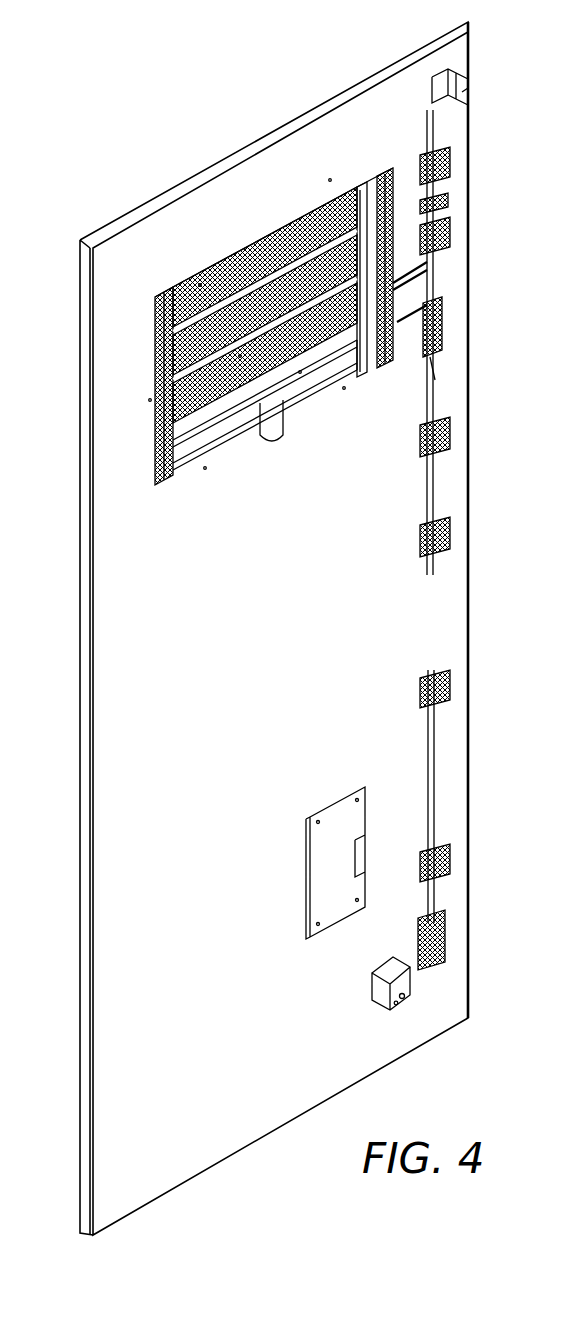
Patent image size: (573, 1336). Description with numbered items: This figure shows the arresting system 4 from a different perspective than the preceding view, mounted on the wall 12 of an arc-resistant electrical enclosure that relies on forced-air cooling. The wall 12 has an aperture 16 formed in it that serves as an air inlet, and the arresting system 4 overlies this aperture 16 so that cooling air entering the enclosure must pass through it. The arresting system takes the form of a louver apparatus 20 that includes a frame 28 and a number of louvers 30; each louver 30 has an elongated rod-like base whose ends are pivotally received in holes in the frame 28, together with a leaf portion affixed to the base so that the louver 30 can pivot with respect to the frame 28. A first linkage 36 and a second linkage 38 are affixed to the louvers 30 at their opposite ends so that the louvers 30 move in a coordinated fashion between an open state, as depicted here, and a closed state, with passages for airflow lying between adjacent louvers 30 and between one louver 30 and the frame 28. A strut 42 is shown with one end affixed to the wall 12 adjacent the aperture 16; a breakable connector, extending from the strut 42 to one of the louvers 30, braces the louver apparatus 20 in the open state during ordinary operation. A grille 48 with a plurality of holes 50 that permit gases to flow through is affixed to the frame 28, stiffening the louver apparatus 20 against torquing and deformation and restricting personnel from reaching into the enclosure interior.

The arresting system 4 is at (92, 434).
The wall 12 is at (105, 589).
The aperture 16 is at (248, 254).
The louver apparatus 20 is at (390, 270).
The frame 28 is at (385, 176).
The louvers 30 is at (153, 312).
The first linkage 36 is at (440, 230).
The second linkage 38 is at (155, 464).
The strut 42 is at (283, 430).
The grille 48 is at (200, 278).
The holes 50 is at (436, 260).